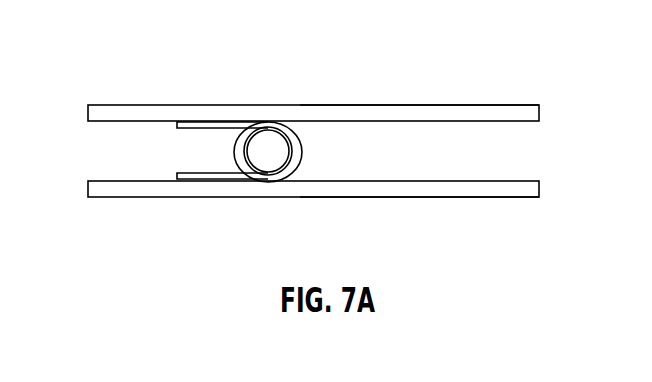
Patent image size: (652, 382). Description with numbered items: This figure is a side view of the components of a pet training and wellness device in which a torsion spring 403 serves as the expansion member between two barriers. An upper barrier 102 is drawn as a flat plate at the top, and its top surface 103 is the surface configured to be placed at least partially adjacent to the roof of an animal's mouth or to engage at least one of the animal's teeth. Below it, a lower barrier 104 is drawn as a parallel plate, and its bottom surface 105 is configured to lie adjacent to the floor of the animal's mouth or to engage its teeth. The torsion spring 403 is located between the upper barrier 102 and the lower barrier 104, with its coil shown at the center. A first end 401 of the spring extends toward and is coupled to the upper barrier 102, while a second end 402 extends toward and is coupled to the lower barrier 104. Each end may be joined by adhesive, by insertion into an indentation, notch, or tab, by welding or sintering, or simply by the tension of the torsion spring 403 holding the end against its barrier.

The upper barrier 102 is at (546, 110).
The top surface 103 is at (470, 102).
The lower barrier 104 is at (546, 185).
The bottom surface 105 is at (472, 200).
The first end 401 is at (172, 128).
The second end 402 is at (173, 181).
The torsion spring 403 is at (305, 152).